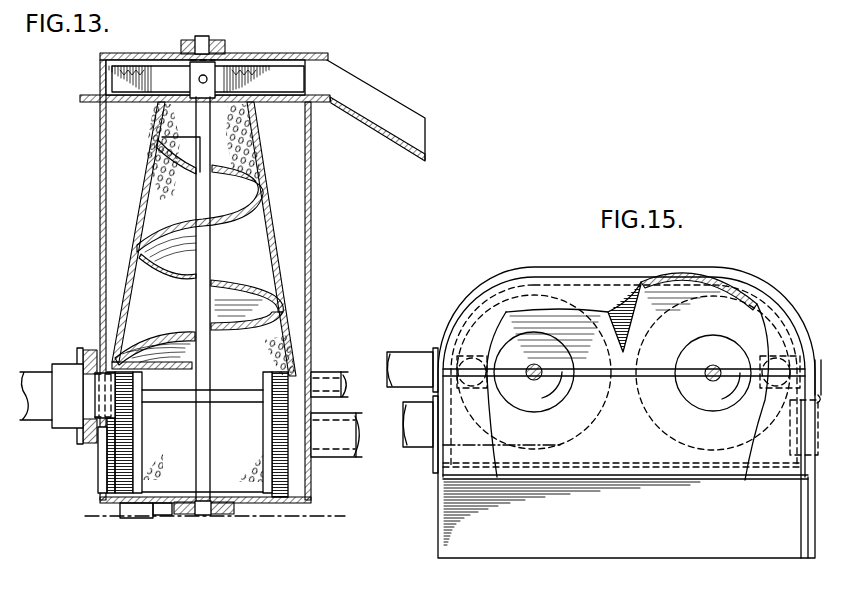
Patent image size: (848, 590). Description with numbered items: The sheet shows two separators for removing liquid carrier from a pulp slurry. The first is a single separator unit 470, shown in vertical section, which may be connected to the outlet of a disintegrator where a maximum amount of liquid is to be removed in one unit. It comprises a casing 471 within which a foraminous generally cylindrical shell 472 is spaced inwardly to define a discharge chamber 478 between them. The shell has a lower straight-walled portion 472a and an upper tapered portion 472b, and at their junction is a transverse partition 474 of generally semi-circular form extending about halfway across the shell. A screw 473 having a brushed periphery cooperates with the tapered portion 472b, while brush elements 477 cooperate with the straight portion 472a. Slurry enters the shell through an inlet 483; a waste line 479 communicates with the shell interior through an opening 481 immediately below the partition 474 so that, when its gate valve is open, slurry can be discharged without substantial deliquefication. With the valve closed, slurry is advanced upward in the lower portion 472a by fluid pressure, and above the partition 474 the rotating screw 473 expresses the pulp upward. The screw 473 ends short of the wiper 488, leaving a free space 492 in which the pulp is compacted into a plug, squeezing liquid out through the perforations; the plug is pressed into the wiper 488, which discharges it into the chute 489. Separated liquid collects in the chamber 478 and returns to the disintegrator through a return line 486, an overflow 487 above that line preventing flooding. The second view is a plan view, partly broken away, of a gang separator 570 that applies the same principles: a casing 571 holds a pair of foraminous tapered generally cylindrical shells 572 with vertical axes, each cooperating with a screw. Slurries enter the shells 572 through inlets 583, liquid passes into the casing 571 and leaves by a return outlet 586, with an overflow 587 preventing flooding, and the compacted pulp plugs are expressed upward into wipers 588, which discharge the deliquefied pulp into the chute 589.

In FIG. 13, the unit 470 is at (314, 214).
In FIG. 13, the casing 471 is at (99, 228).
In FIG. 13, the foraminous generally cylindrical shell 472 is at (280, 292).
In FIG. 13, the lower straight-walled portion 472a is at (118, 462).
In FIG. 13, the upper tapered portion 472b is at (308, 133).
In FIG. 13, the screw 473 is at (177, 222).
In FIG. 13, the transverse partition 474 is at (182, 365).
In FIG. 13, the brush elements 477 is at (128, 443).
In FIG. 13, the discharge chamber 478 is at (112, 165).
In FIG. 13, the waste line 479 is at (37, 375).
In FIG. 13, the opening 481 is at (97, 352).
In FIG. 13, the inlet 483 is at (118, 510).
In FIG. 13, the return line 486 is at (340, 455).
In FIG. 13, the overflow 487 is at (321, 375).
In FIG. 13, the wiper 488 is at (265, 76).
In FIG. 13, the chute 489 is at (380, 108).
In FIG. 13, the free space 492 is at (150, 137).
In FIG. 15, the gang separator 570 is at (513, 262).
In FIG. 15, the casing 571 is at (440, 500).
In FIG. 15, the foraminous tapered generally cylindrical shells 572 is at (572, 294).
In FIG. 15, the inlets 583 is at (411, 354).
In FIG. 15, the return outlet 586 is at (428, 442).
In FIG. 15, the overflow 587 is at (818, 457).
In FIG. 15, the wipers 588 is at (572, 401).
In FIG. 15, the chute 589 is at (450, 522).